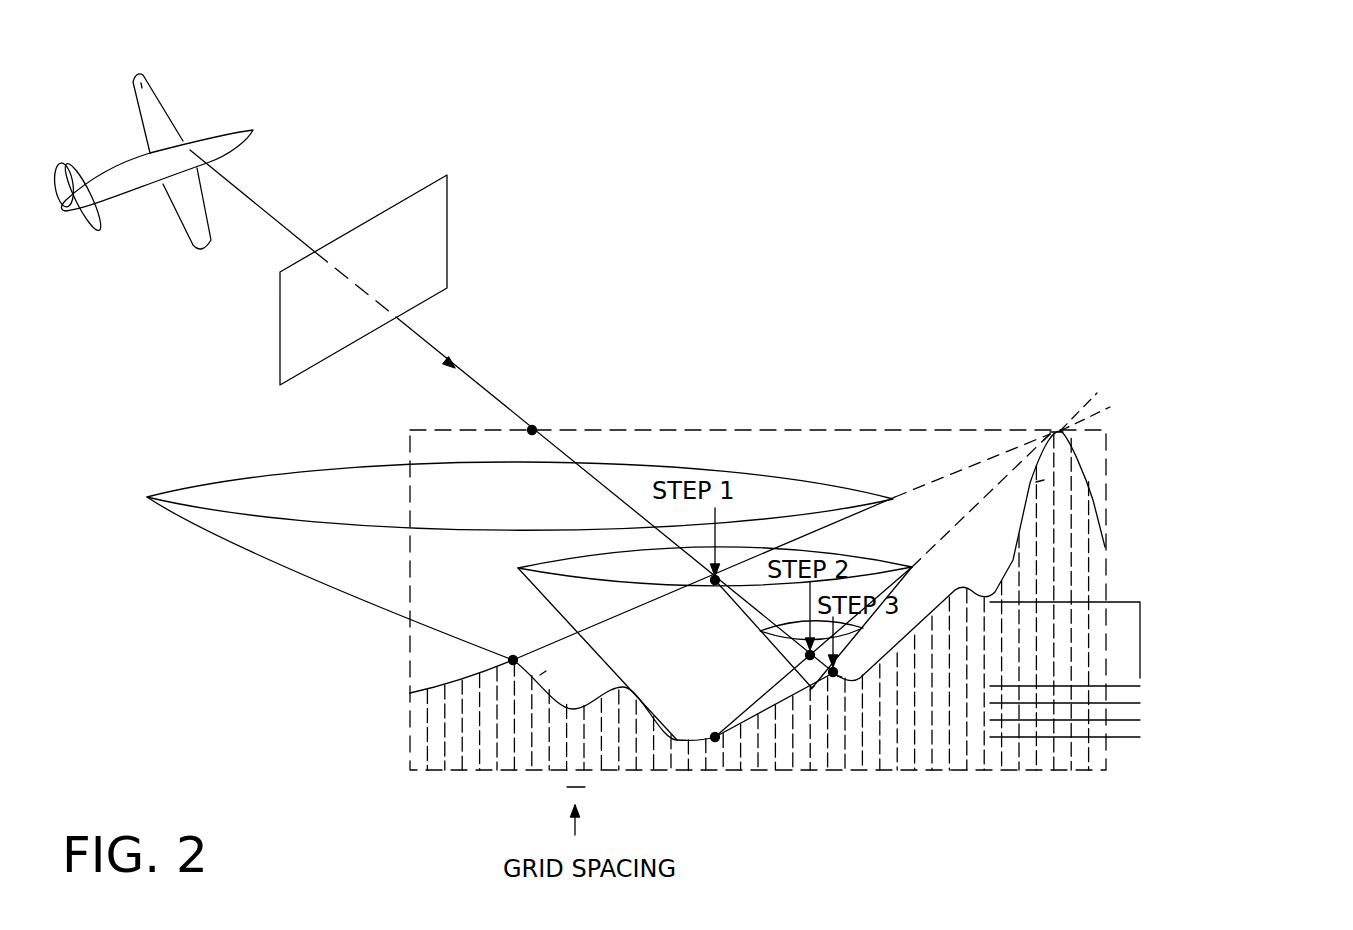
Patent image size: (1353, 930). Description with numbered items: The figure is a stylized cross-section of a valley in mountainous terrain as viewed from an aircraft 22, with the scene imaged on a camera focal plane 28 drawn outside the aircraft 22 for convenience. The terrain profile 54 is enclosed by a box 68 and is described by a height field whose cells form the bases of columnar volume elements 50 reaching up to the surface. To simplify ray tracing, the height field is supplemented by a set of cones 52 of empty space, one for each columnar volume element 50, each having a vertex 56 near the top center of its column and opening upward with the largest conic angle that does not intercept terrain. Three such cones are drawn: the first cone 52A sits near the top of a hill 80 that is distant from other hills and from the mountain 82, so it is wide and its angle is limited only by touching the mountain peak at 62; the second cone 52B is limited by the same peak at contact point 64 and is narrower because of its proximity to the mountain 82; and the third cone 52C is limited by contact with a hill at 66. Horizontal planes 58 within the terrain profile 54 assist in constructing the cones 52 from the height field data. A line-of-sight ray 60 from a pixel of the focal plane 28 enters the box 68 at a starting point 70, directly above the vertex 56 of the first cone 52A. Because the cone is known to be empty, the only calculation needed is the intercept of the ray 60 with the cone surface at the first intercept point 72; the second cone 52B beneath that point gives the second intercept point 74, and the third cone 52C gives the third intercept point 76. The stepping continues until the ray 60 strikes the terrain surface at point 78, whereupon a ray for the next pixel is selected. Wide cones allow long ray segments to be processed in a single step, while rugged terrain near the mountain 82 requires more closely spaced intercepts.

The aircraft 22 is at (217, 128).
The camera focal plane 28 is at (447, 235).
The columnar volume elements 50 is at (793, 742).
The cones of empty space 52 is at (592, 513).
The first cone 52A is at (277, 560).
The second cone 52B is at (547, 592).
The third cone 52C is at (860, 631).
The terrain profile 54 is at (398, 748).
The vertex 56 is at (513, 657).
The horizontal planes 58 is at (1160, 707).
The ray 60 is at (502, 405).
The mountain peak contact point 62 is at (1057, 430).
The contact point 64 is at (1047, 437).
The hill contact point 66 is at (815, 689).
The box 68 is at (1107, 456).
The starting point 70 is at (532, 428).
The first intercept point 72 is at (714, 584).
The second intercept point 74 is at (807, 654).
The third intercept point 76 is at (830, 672).
The terrain intercept point 78 is at (840, 675).
The hill 80 is at (543, 673).
The mountain 82 is at (1040, 480).